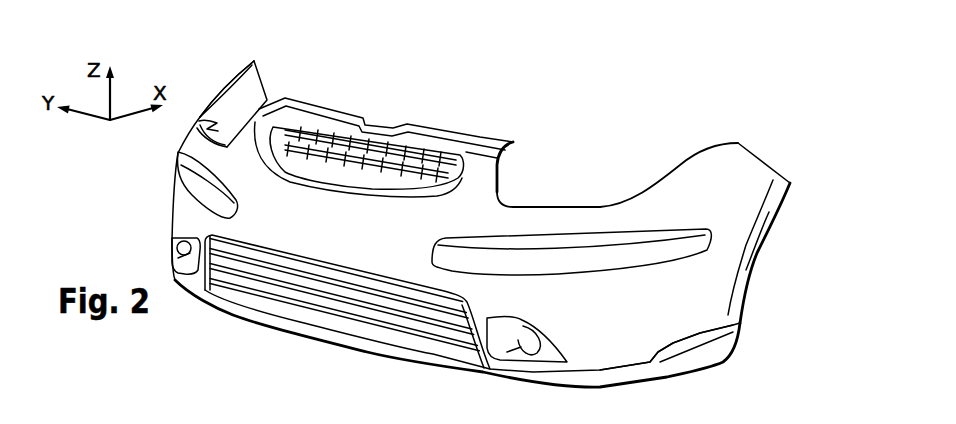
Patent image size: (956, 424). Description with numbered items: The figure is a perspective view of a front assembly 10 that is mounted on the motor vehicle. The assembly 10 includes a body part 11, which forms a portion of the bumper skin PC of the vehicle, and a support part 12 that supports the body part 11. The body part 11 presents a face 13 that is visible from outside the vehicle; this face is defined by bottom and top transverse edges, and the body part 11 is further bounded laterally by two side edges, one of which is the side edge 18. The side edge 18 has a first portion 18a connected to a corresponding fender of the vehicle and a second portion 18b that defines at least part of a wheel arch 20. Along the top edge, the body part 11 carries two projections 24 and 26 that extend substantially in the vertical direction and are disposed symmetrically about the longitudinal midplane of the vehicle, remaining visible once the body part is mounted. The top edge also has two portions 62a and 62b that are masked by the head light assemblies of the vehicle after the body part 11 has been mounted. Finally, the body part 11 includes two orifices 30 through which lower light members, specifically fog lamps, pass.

The front assembly 10 is at (767, 108).
The body part 11 is at (816, 203).
The support part 12 is at (519, 125).
The face 13 is at (358, 137).
The side edge 18 is at (218, 423).
The first portion 18a is at (265, 93).
The second portion 18b is at (261, 110).
The wheel arch 20 is at (805, 239).
The projection 24 is at (477, 178).
The projection 26 is at (247, 127).
The orifice 30 is at (188, 247).
The top edge portion 62a is at (653, 188).
The top edge portion 62b is at (232, 72).
The bumper skin PC is at (681, 315).